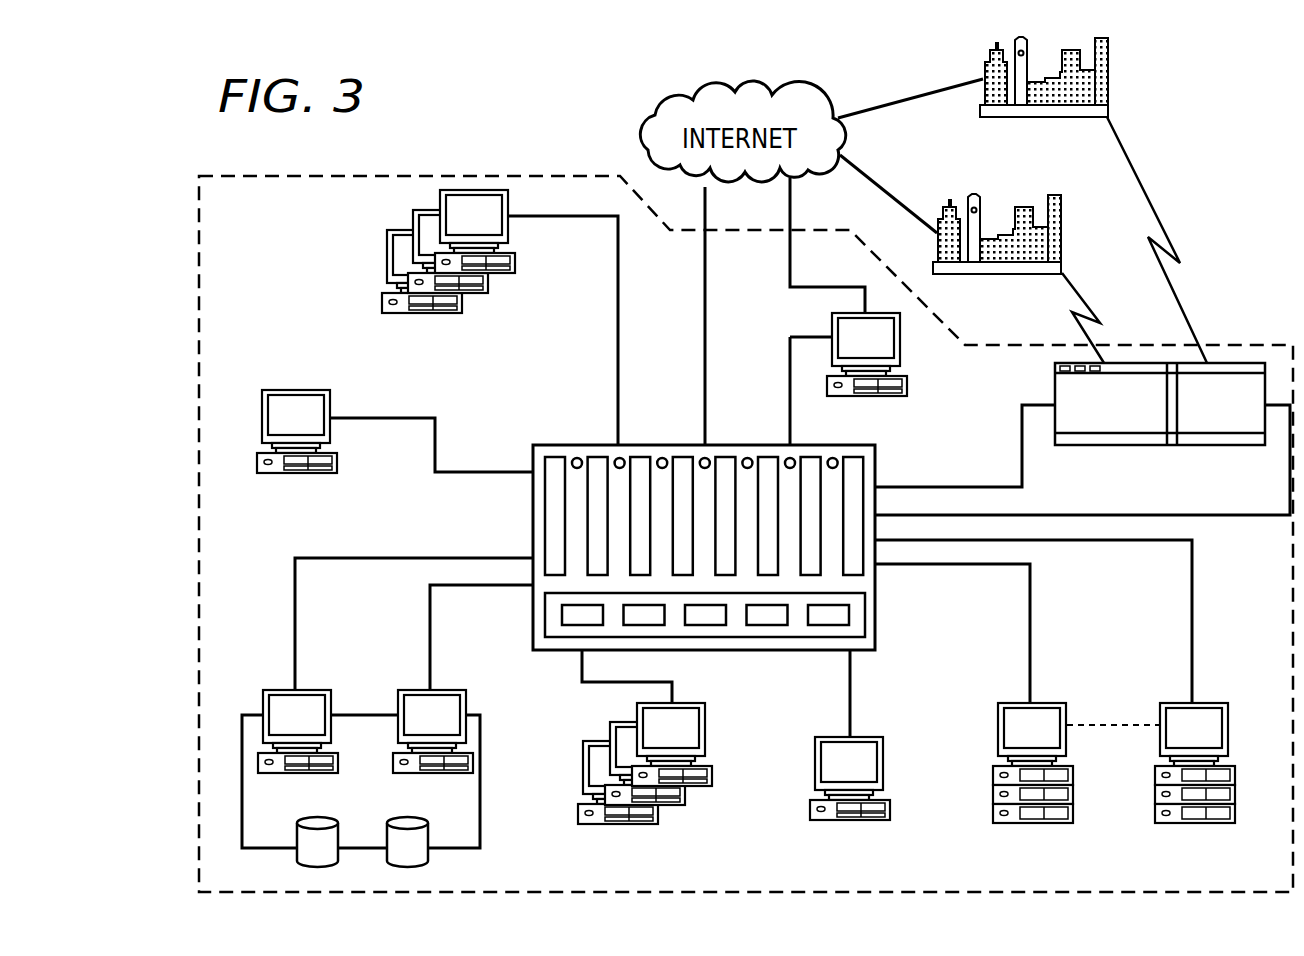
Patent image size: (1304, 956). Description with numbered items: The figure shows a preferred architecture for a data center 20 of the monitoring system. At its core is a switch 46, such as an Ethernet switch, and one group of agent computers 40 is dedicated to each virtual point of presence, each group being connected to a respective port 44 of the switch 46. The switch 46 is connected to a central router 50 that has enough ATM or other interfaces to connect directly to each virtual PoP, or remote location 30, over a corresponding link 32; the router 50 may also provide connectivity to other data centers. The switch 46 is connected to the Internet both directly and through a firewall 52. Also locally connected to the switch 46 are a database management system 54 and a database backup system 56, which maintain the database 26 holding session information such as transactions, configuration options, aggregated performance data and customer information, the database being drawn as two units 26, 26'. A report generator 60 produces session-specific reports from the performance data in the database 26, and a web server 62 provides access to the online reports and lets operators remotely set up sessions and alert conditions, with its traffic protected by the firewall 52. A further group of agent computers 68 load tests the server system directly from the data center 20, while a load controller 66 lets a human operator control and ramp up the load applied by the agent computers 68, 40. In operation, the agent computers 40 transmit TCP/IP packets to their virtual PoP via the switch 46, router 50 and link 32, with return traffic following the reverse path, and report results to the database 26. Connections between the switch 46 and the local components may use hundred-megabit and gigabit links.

The data center 20 is at (353, 176).
The database 26 is at (434, 849).
The backup database 26' is at (284, 849).
The remote location 30 is at (1108, 55).
The link 32 is at (1178, 275).
The agent computers 40 is at (1040, 703).
The port 44 is at (875, 517).
The switch 46 is at (585, 445).
The central router 50 is at (1055, 390).
The firewall 52 is at (900, 345).
The database management system 54 is at (420, 690).
The database backup system 56 is at (280, 690).
The report generator component 60 is at (300, 390).
The web server 62 is at (510, 230).
The load controller computer 66 is at (862, 737).
The agent computers 68 is at (705, 735).